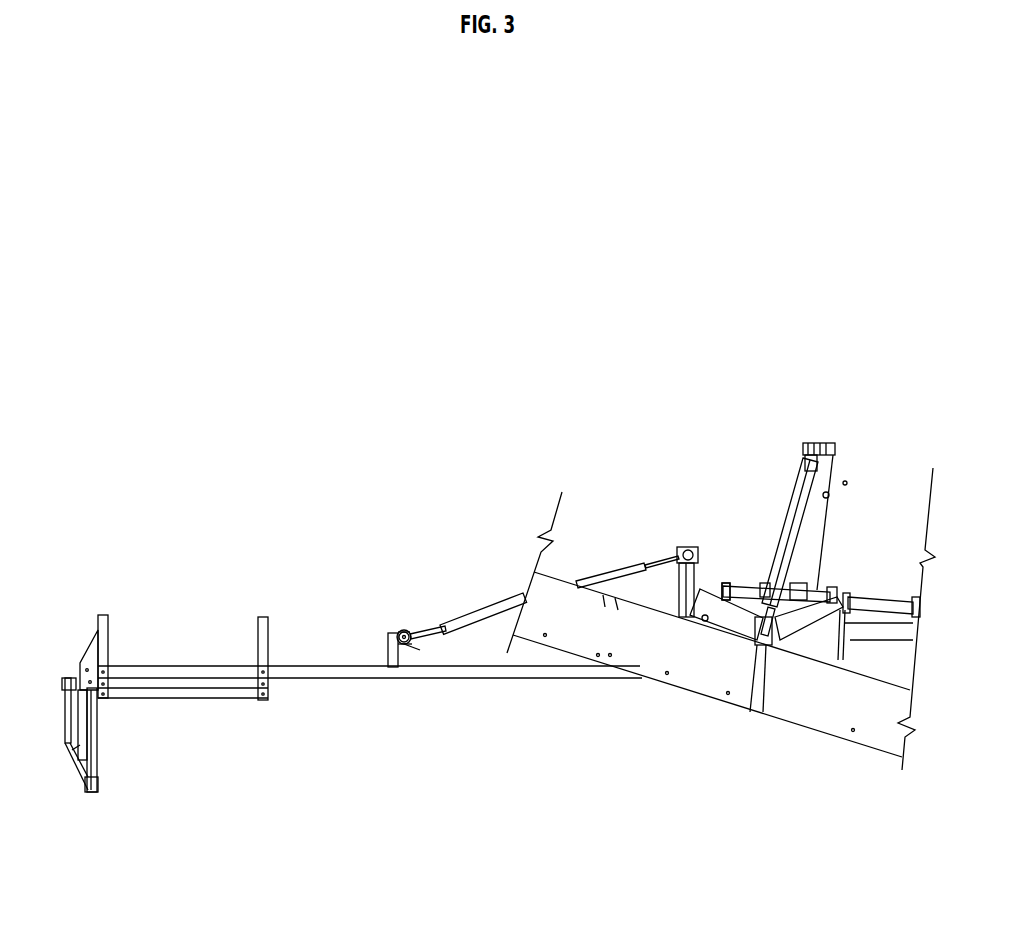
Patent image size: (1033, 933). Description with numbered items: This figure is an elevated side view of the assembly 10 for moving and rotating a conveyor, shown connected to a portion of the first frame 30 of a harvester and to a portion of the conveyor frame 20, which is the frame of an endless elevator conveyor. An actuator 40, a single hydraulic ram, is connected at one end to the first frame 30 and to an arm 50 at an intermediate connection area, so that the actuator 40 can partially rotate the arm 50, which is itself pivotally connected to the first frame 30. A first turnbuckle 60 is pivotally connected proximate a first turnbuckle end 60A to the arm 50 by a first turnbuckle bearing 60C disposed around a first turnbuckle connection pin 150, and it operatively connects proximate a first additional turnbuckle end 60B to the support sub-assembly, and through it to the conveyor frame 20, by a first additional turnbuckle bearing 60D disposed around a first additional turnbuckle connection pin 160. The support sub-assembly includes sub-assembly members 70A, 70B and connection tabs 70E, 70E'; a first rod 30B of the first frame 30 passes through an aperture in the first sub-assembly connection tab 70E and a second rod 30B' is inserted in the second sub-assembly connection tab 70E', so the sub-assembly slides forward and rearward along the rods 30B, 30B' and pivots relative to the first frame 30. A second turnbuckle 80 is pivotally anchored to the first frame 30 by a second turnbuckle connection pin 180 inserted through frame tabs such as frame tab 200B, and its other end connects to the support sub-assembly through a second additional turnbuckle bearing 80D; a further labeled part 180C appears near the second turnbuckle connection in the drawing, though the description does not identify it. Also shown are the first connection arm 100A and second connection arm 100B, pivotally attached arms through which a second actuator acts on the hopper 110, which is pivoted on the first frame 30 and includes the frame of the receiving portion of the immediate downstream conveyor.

The assembly 10 is at (516, 315).
The conveyor frame 20 is at (370, 793).
The first frame 30 is at (734, 661).
The first rod 30B is at (741, 557).
The second rod 30B' is at (885, 586).
The actuator 40 is at (806, 544).
The arm 50 is at (880, 424).
The first turnbuckle 60 is at (751, 531).
The first turnbuckle end 60A is at (822, 400).
The first additional turnbuckle end 60B is at (770, 691).
The first turnbuckle bearing 60C is at (775, 413).
The first additional turnbuckle bearing 60D is at (748, 709).
The sub-assembly member 70A is at (654, 752).
The sub-assembly member 70B is at (856, 728).
The first sub-assembly connection tab 70E is at (644, 534).
The second sub-assembly connection tab 70E' is at (881, 561).
The second turnbuckle 80 is at (461, 553).
The second additional turnbuckle bearing 80D is at (358, 601).
The first connection arm 100A is at (138, 785).
The second connection arm 100B is at (145, 738).
The hopper 110 is at (193, 716).
The first turnbuckle connection pin 150 is at (855, 441).
The first additional turnbuckle connection pin 160 is at (685, 693).
The second turnbuckle connection pin 180 is at (420, 736).
The bracket 180C is at (645, 509).
The frame tab 200B is at (390, 699).